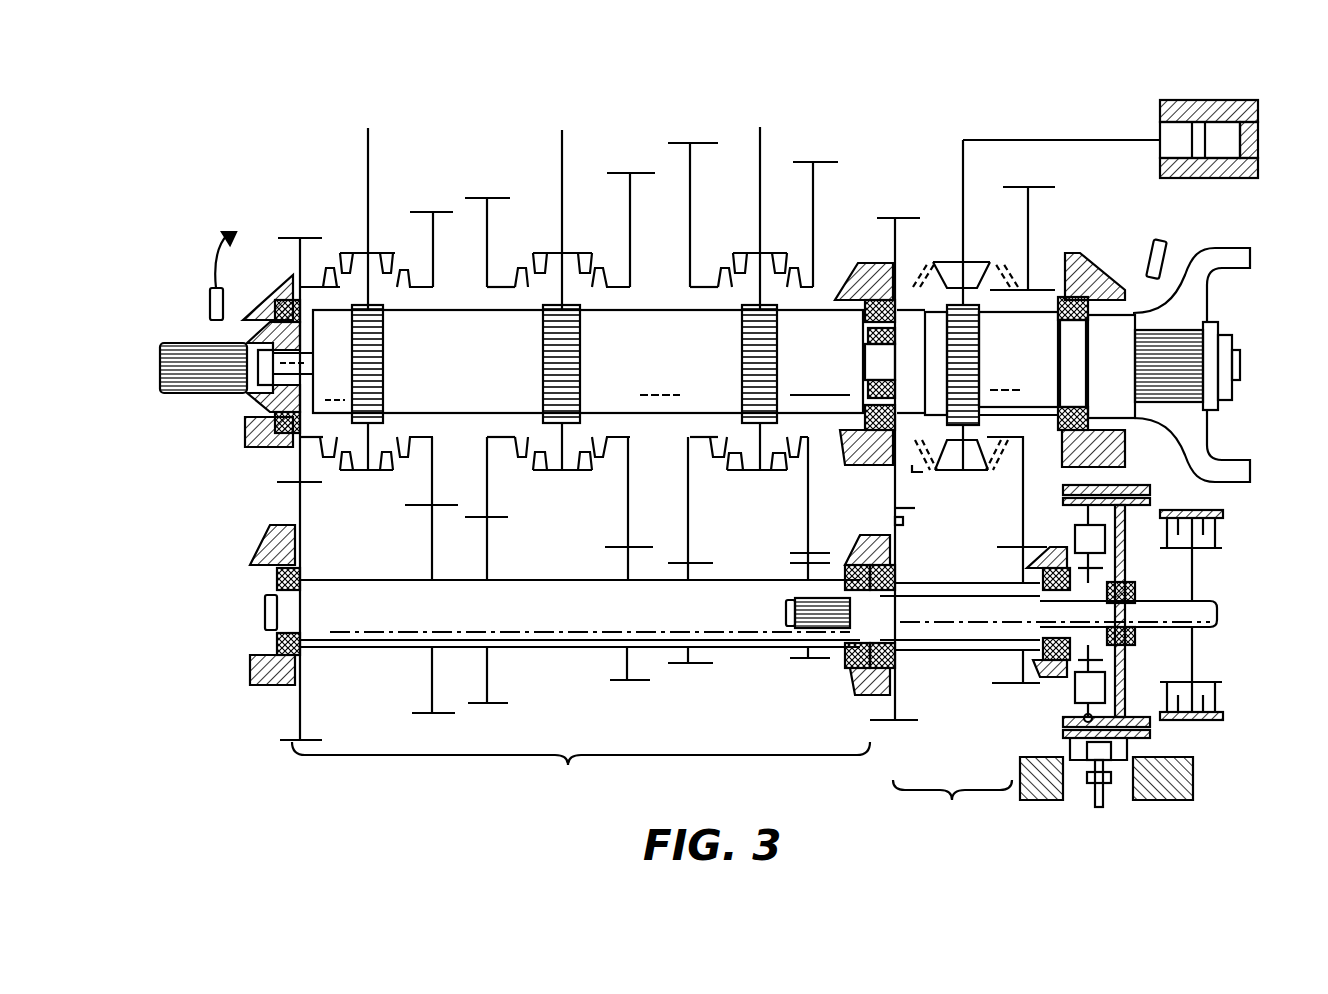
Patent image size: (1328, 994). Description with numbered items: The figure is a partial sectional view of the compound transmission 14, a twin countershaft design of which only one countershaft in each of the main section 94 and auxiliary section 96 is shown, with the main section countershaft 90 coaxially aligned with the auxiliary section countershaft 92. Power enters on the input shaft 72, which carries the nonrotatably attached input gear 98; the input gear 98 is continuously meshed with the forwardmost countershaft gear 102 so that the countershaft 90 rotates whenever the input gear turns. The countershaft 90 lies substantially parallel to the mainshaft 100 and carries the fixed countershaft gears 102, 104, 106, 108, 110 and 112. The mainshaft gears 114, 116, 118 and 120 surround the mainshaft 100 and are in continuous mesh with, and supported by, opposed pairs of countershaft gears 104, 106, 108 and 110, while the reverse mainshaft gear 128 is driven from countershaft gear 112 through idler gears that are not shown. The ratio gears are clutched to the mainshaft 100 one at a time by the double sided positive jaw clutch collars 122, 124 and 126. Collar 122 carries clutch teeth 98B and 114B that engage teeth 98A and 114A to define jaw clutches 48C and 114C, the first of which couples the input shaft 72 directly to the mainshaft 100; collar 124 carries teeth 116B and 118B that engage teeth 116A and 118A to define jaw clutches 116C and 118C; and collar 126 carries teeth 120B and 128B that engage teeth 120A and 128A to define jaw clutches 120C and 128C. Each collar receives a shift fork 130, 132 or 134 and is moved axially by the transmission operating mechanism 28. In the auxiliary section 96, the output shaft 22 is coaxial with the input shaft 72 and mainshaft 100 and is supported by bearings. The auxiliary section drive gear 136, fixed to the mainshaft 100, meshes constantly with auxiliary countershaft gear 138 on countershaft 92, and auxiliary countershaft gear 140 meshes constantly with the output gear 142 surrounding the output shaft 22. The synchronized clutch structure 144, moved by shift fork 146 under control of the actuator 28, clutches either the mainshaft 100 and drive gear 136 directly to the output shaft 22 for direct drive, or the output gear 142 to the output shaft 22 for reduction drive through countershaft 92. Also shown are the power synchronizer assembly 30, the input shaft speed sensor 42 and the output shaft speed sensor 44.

The compound transmission 14 is at (732, 97).
The output shaft 22 is at (1082, 365).
The transmission operating mechanism 28 is at (1222, 104).
The power synchronizer assembly 30 is at (1244, 558).
The transmission input shaft speed sensor 42 is at (225, 298).
The transmission output shaft speed sensor 44 is at (1168, 235).
The positive jaw clutch 48C is at (332, 262).
The input shaft 72 is at (160, 380).
The main section countershaft 90 is at (590, 590).
The auxiliary section countershaft 92 is at (945, 582).
The main section 94 is at (581, 771).
The auxiliary section 96 is at (952, 806).
The input gear 98 is at (290, 447).
The clutch teeth 98A is at (338, 455).
The clutch teeth 98B is at (328, 262).
The mainshaft 100 is at (588, 361).
The countershaft gear 102 is at (302, 718).
The countershaft gear 104 is at (432, 665).
The countershaft gear 106 is at (490, 662).
The countershaft gear 108 is at (627, 660).
The countershaft gear 110 is at (690, 570).
The countershaft gear 112 is at (808, 655).
The mainshaft gear 114 is at (435, 262).
The clutch teeth 114A is at (408, 455).
The clutch teeth 114B is at (385, 455).
The positive jaw clutch 114C is at (390, 287).
The mainshaft gear 116 is at (485, 470).
The clutch teeth 116A is at (500, 335).
The clutch teeth 116B is at (540, 472).
The positive jaw clutch 116C is at (530, 458).
The mainshaft gear 118 is at (630, 253).
The clutch teeth 118A is at (620, 390).
The clutch teeth 118B is at (592, 458).
The positive jaw clutch 118C is at (580, 255).
The mainshaft gear 120 is at (690, 268).
The clutch teeth 120A is at (699, 335).
The clutch teeth 120B is at (730, 465).
The positive jaw clutch 120C is at (738, 300).
The jaw clutch collar 122 is at (378, 250).
The jaw clutch collar 124 is at (538, 245).
The jaw clutch collar 126 is at (740, 245).
The reverse mainshaft gear 128 is at (815, 210).
The clutch teeth 128A is at (790, 290).
The clutch teeth 128B is at (780, 462).
The positive jaw clutch 128C is at (785, 440).
The shift fork 130 is at (368, 168).
The shift fork 132 is at (562, 170).
The shift fork 134 is at (760, 160).
The auxiliary section drive gear 136 is at (900, 250).
The auxiliary section countershaft gear 138 is at (903, 521).
The auxiliary section countershaft gear 140 is at (1023, 665).
The output gear 142 is at (1028, 240).
The synchronized clutch structure 144 is at (978, 262).
The shift fork 146 is at (963, 168).